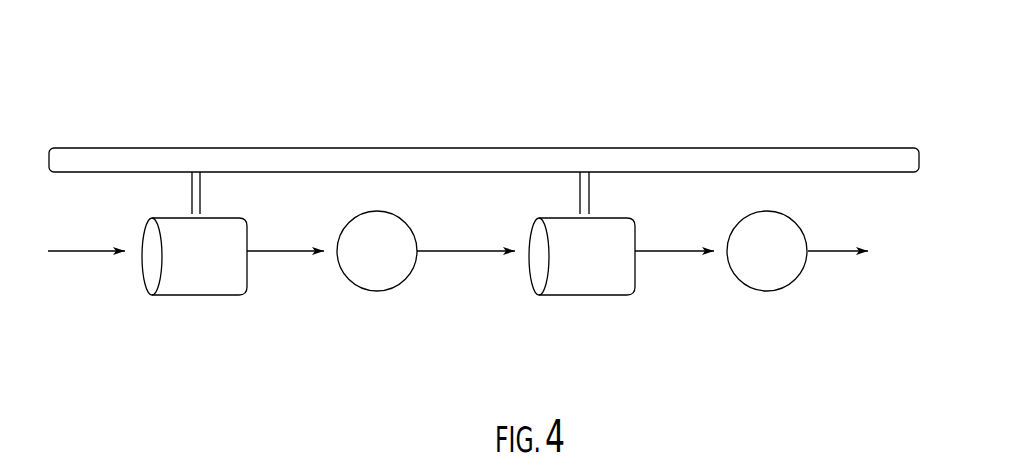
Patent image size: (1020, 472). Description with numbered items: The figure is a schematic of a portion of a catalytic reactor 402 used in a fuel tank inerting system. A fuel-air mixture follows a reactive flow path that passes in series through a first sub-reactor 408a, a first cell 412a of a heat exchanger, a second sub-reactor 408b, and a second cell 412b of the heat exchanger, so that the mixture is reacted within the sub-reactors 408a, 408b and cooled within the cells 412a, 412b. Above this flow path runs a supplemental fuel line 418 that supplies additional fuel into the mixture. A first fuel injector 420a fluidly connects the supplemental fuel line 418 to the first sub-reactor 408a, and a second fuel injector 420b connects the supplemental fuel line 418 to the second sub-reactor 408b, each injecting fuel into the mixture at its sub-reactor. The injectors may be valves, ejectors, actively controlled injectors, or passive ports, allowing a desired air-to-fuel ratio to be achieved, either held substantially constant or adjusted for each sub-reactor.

The catalytic reactor 402 is at (128, 88).
The supplemental fuel line 418 is at (403, 157).
The first fuel injector 420a is at (197, 193).
The second fuel injector 420b is at (585, 190).
The first sub-reactor 408a is at (195, 285).
The second sub-reactor 408b is at (587, 280).
The first cell 412a is at (372, 278).
The second cell 412b is at (759, 277).